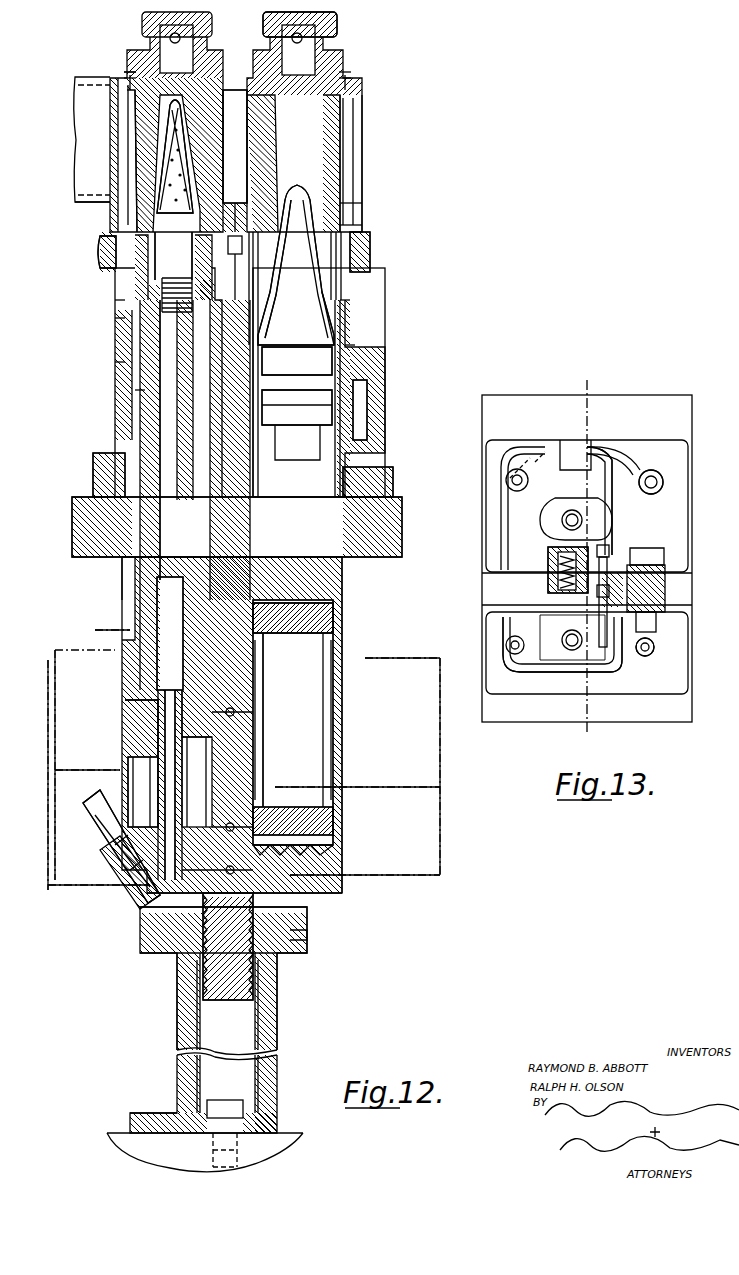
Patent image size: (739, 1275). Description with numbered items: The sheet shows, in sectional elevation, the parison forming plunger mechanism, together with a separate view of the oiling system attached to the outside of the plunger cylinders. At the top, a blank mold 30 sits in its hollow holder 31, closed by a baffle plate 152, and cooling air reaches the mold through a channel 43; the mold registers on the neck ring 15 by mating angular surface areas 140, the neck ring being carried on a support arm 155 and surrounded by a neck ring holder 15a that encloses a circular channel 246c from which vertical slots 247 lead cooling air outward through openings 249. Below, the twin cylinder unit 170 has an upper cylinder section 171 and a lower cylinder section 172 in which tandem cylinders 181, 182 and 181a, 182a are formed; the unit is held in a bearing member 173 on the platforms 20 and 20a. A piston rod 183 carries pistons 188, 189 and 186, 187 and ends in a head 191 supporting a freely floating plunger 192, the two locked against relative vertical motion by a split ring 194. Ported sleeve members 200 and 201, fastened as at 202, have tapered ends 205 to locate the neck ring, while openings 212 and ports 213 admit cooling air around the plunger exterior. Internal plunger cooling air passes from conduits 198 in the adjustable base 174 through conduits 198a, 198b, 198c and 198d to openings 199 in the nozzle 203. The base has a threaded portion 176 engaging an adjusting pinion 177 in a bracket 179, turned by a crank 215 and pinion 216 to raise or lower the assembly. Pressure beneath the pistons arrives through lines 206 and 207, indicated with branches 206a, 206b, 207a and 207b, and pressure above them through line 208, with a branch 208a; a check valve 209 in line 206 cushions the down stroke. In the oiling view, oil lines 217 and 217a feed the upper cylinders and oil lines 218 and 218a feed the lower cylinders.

In FIG. 12, the baffle plate 152 is at (262, 30).
In FIG. 12, the blank mold 30 is at (135, 68).
In FIG. 12, the nozzle 203 is at (165, 172).
In FIG. 12, the openings 199 is at (140, 200).
In FIG. 12, the circular channel 246c is at (105, 250).
In FIG. 12, the conduit 198d is at (150, 258).
In FIG. 12, the support arm 155 is at (98, 292).
In FIG. 12, the ports 213 is at (115, 300).
In FIG. 12, the openings 212 is at (110, 318).
In FIG. 12, the ported sleeve member 201 is at (115, 362).
In FIG. 12, the upper cylinder section 171 is at (118, 370).
In FIG. 12, the fastening 202 is at (140, 385).
In FIG. 12, the head 191 is at (148, 395).
In FIG. 12, the piston rod 183 is at (160, 385).
In FIG. 12, the piston 186 is at (95, 510).
In FIG. 12, the cylinder 181a is at (135, 568).
In FIG. 12, the conduit 198c is at (165, 573).
In FIG. 12, the conduit 198b is at (165, 600).
In FIG. 12, the passage 207a is at (112, 628).
In FIG. 12, the line 208 is at (56, 653).
In FIG. 12, the piston 187 is at (125, 712).
In FIG. 12, the cylinder 182a is at (130, 752).
In FIG. 12, the line 208a is at (95, 770).
In FIG. 12, the conduit 198a is at (168, 785).
In FIG. 12, the crank 215 is at (90, 812).
In FIG. 12, the passage 207b is at (99, 885).
In FIG. 12, the line 207 is at (48, 885).
In FIG. 12, the pinion 216 is at (135, 935).
In FIG. 12, the platform 20a is at (130, 1135).
In FIG. 12, the channel 43 is at (242, 120).
In FIG. 12, the hollow holder 31 is at (366, 128).
In FIG. 12, the openings 249 is at (358, 215).
In FIG. 12, the mating angular surface areas 140 is at (355, 232).
In FIG. 12, the vertical slots 247 is at (370, 245).
In FIG. 12, the plunger 192 is at (300, 268).
In FIG. 12, the neck ring holder 15a is at (345, 270).
In FIG. 12, the neck ring 15 is at (340, 287).
In FIG. 12, the tapered end 205 is at (352, 296).
In FIG. 12, the split ring 194 is at (345, 345).
In FIG. 12, the cylinder unit 170 is at (422, 362).
In FIG. 12, the ported sleeve member 200 is at (330, 397).
In FIG. 12, the bearing member 173 is at (362, 485).
In FIG. 12, the platform 20 is at (392, 518).
In FIG. 12, the cylinder 181 is at (340, 550).
In FIG. 12, the piston 188 is at (330, 610).
In FIG. 12, the lower cylinder section 172 is at (338, 628).
In FIG. 12, the line 206a is at (375, 658).
In FIG. 12, the cylinder 182 is at (330, 758).
In FIG. 12, the line 206b is at (362, 787).
In FIG. 12, the piston 189 is at (330, 808).
In FIG. 12, the line 206 is at (440, 820).
In FIG. 12, the adjustable base 174 is at (330, 858).
In FIG. 12, the conduits 198 is at (280, 908).
In FIG. 12, the adjusting pinion 177 is at (292, 930).
In FIG. 12, the threaded portion 176 is at (255, 978).
In FIG. 12, the bracket 179 is at (272, 1010).
In FIG. 13, the oil line 217 is at (640, 462).
In FIG. 13, the oil line 217a is at (620, 513).
In FIG. 13, the check valve 209 is at (560, 567).
In FIG. 13, the oil line 218 is at (625, 680).
In FIG. 13, the oil line 218a is at (605, 703).